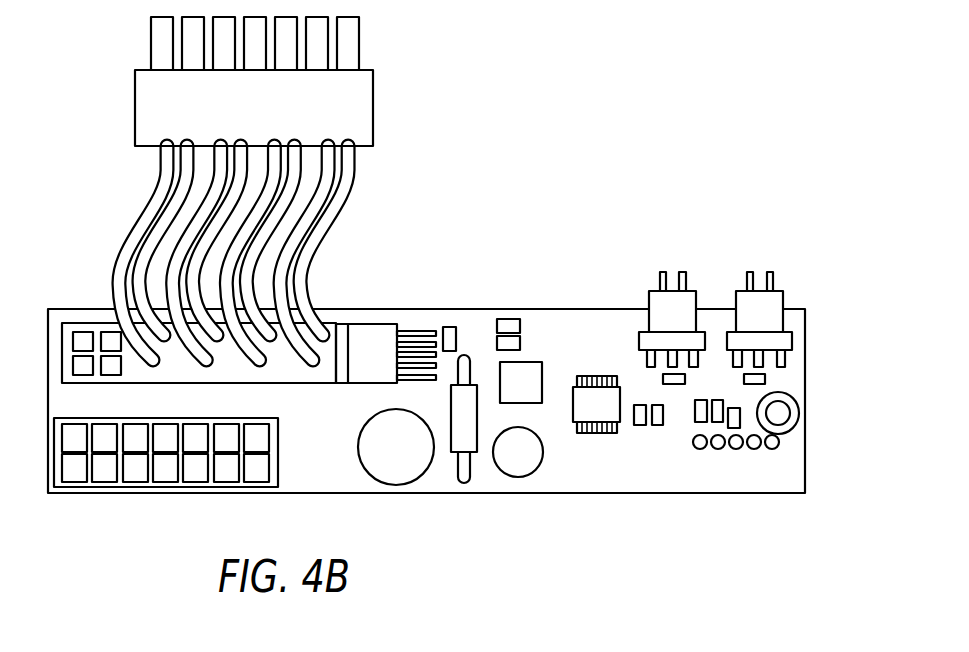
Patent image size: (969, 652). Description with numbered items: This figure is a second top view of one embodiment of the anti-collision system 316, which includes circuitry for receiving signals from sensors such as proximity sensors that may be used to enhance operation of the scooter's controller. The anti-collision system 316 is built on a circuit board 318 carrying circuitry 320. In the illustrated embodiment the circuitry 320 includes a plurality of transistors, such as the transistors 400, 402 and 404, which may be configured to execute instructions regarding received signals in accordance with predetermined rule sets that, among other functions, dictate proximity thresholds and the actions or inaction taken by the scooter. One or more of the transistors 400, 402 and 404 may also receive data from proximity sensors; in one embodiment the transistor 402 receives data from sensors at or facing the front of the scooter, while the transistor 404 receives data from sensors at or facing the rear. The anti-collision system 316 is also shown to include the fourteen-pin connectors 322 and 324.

The anti-collision system 316 is at (637, 133).
The circuit board 318 is at (438, 493).
The circuitry 320 is at (652, 458).
The 14-pin connector 322 is at (357, 100).
The 14-pin connector 324 is at (110, 487).
The transistor 400 is at (370, 347).
The transistor 402 is at (661, 306).
The transistor 404 is at (773, 295).